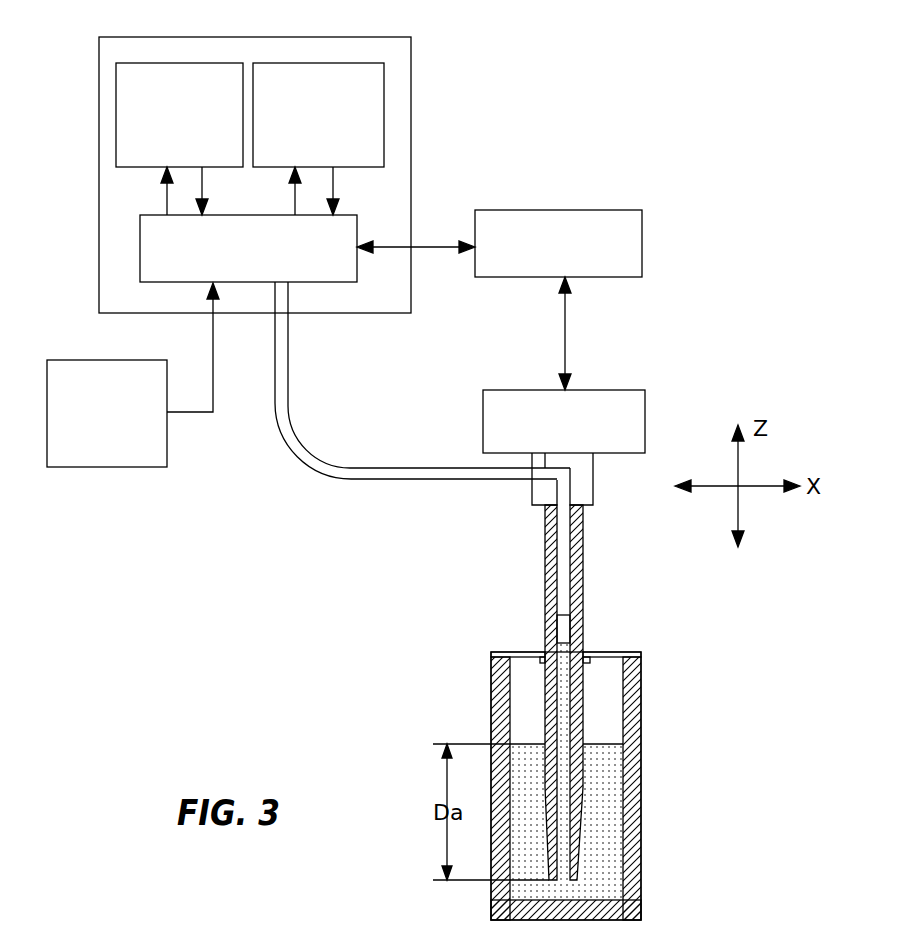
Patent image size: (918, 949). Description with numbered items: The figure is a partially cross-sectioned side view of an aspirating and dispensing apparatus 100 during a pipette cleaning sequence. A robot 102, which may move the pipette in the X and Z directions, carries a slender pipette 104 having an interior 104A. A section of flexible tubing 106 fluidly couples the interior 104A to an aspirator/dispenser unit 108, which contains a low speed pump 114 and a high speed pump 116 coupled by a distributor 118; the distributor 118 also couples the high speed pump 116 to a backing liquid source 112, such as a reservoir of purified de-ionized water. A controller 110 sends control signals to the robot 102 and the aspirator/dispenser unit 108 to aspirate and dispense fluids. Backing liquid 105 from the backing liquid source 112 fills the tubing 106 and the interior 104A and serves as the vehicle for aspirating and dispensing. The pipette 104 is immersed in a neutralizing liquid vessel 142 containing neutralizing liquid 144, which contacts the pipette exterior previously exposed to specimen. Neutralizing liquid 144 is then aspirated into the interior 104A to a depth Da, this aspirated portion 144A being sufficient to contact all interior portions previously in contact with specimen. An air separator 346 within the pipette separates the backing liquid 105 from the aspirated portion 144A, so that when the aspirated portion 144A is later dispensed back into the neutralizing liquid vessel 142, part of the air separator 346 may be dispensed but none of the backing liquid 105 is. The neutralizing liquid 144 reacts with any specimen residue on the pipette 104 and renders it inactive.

The aspirating and dispensing apparatus 100 is at (585, 106).
The robot 102 is at (605, 390).
The pipette 104 is at (567, 692).
The interior 104A is at (545, 572).
The backing liquid 105 is at (565, 515).
The tubing 106 is at (403, 482).
The aspirator/dispenser unit 108 is at (92, 151).
The controller 110 is at (642, 238).
The backing liquid source 112 is at (85, 360).
The low speed pump 114 is at (116, 118).
The high speed pump 116 is at (384, 118).
The distributor 118 is at (140, 245).
The neutralizing liquid vessel 142 is at (650, 768).
The neutralizing liquid 144 is at (600, 857).
The aspirated portion 144A is at (567, 687).
The air separator 346 is at (563, 627).